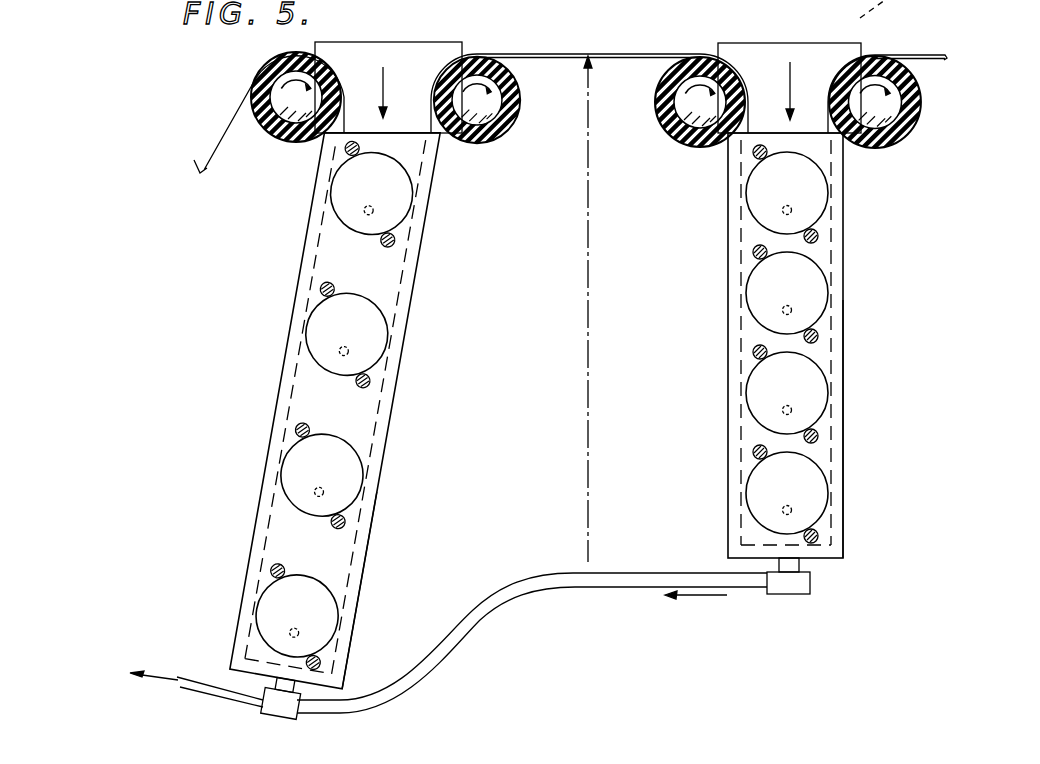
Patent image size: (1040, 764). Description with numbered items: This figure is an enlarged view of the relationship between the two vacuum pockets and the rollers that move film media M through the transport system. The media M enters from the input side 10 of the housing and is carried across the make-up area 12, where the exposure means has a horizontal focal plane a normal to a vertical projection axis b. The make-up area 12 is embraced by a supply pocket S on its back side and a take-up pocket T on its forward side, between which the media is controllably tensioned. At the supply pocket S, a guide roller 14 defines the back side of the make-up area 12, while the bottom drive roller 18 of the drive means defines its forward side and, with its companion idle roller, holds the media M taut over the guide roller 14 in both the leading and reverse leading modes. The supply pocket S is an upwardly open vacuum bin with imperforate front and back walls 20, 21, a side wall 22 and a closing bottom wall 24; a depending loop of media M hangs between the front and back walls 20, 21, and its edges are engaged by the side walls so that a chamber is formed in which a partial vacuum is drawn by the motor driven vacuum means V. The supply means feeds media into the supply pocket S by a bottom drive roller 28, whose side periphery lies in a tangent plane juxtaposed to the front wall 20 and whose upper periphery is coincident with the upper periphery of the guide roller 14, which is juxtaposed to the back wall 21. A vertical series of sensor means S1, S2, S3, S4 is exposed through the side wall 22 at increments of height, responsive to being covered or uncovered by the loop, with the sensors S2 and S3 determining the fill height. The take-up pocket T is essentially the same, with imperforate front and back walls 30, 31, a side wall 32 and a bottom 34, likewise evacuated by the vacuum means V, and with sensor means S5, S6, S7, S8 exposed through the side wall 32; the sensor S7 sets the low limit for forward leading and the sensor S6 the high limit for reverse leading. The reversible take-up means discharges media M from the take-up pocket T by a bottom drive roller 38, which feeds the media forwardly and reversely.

The input side 10 is at (234, 76).
The make-up area 12 is at (620, 103).
The guide roller 14 is at (477, 100).
The bottom drive roller 18 is at (700, 102).
The front wall 20 is at (252, 537).
The back wall 21 is at (366, 556).
The side wall 22 is at (358, 413).
The bottom wall 24 is at (263, 663).
The bottom drive roller 28 is at (296, 97).
The front wall 30 is at (730, 449).
The back wall 31 is at (843, 403).
The side wall 32 is at (820, 357).
The bottom 34 is at (748, 545).
The bottom drive roller 38 is at (875, 102).
The supply pocket S is at (298, 245).
The take-up pocket T is at (726, 240).
The motor driven vacuum means V is at (511, 589).
The film media M is at (216, 127).
The focal plane a is at (553, 52).
The projection axis b is at (598, 272).
The sensor means S1 is at (372, 194).
The sensor means S2 is at (347, 335).
The sensor means S3 is at (322, 476).
The sensor means S4 is at (297, 617).
The sensor means S5 is at (787, 194).
The sensor means S6 is at (787, 294).
The sensor means S7 is at (787, 394).
The sensor means S8 is at (787, 494).